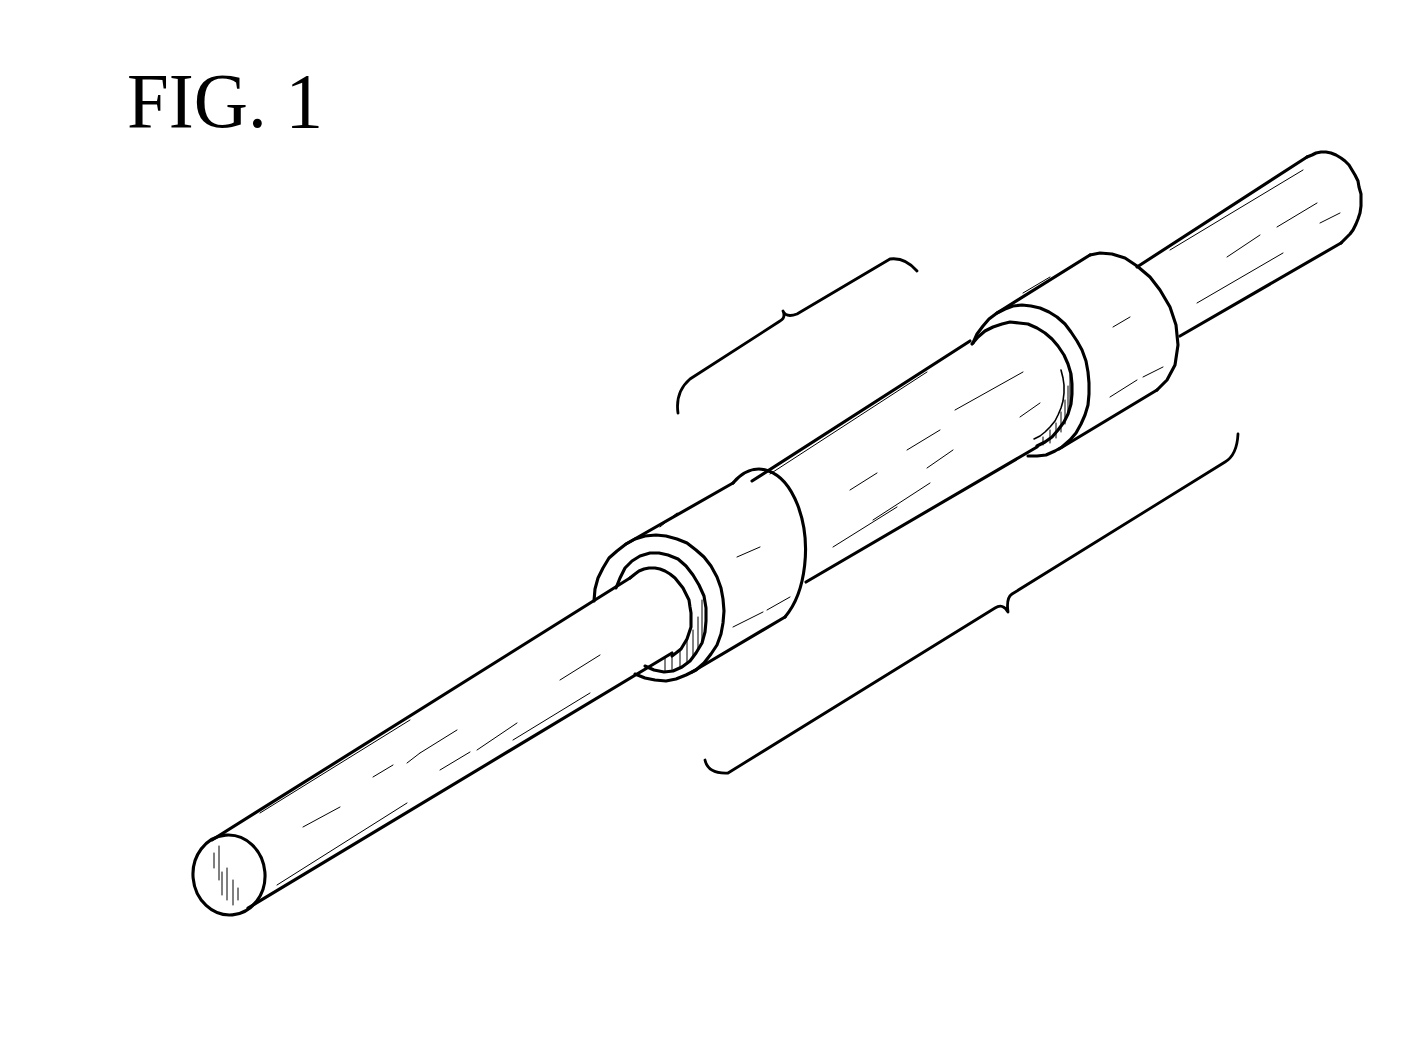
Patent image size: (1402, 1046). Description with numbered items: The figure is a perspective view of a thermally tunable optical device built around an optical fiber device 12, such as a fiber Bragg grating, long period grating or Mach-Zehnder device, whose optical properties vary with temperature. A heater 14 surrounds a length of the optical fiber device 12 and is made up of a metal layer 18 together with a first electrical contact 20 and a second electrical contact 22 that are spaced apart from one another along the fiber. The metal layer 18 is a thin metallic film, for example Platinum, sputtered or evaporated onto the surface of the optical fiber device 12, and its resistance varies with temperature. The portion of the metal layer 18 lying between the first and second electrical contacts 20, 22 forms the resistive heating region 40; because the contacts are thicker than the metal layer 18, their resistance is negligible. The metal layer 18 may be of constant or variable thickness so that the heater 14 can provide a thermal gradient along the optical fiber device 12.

The optical fiber device 12 is at (407, 713).
The heater 14 is at (971, 603).
The metal layer 18 is at (892, 397).
The first electrical contact 20 is at (670, 513).
The second electrical contact 22 is at (1060, 270).
The resistive heating region 40 is at (798, 336).